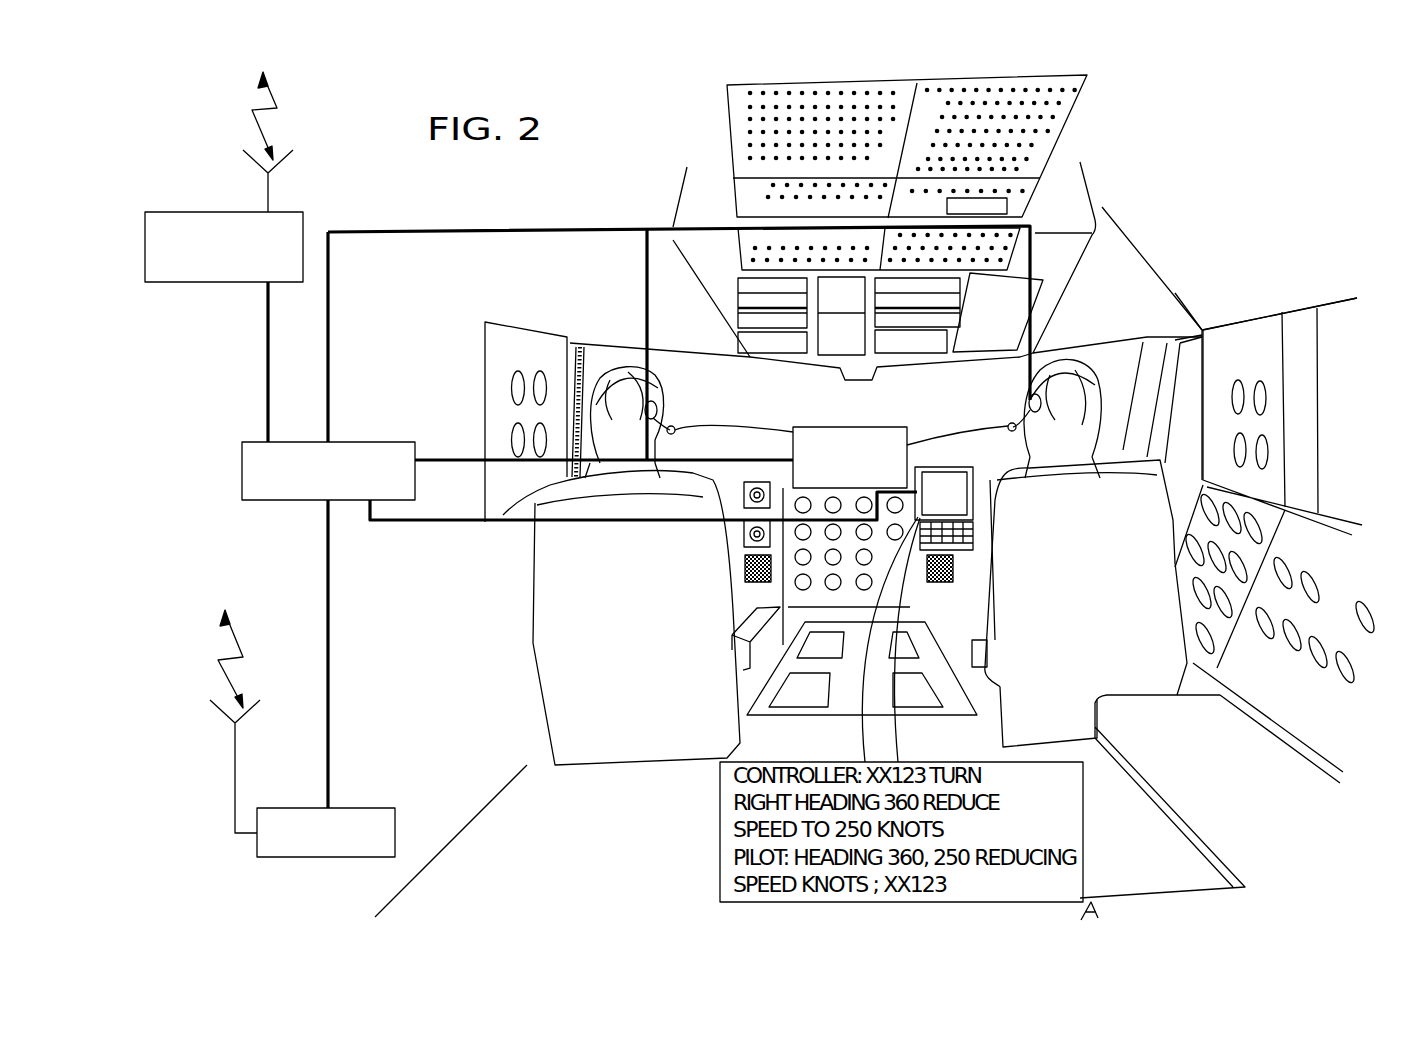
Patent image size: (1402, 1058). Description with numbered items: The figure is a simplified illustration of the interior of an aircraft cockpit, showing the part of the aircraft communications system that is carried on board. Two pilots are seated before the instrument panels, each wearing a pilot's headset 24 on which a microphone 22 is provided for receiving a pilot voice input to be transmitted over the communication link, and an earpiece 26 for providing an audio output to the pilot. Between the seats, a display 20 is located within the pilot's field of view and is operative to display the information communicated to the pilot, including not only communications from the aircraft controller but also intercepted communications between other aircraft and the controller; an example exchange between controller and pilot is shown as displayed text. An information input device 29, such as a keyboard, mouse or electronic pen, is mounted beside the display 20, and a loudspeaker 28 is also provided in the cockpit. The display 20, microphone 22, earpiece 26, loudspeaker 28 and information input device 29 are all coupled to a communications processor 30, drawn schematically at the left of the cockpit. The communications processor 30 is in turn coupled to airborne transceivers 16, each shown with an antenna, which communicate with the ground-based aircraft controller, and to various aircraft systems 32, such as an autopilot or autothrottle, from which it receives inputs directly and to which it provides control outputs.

The airborne transceiver 16 is at (204, 218).
The communications processor 30 is at (368, 442).
The aircraft systems 32 is at (898, 432).
The display 20 is at (938, 472).
The information input device 29 is at (976, 533).
The loudspeaker 28 is at (743, 578).
The pilot's headset 24 is at (618, 375).
The earpiece 26 is at (660, 408).
The microphone 22 is at (713, 423).